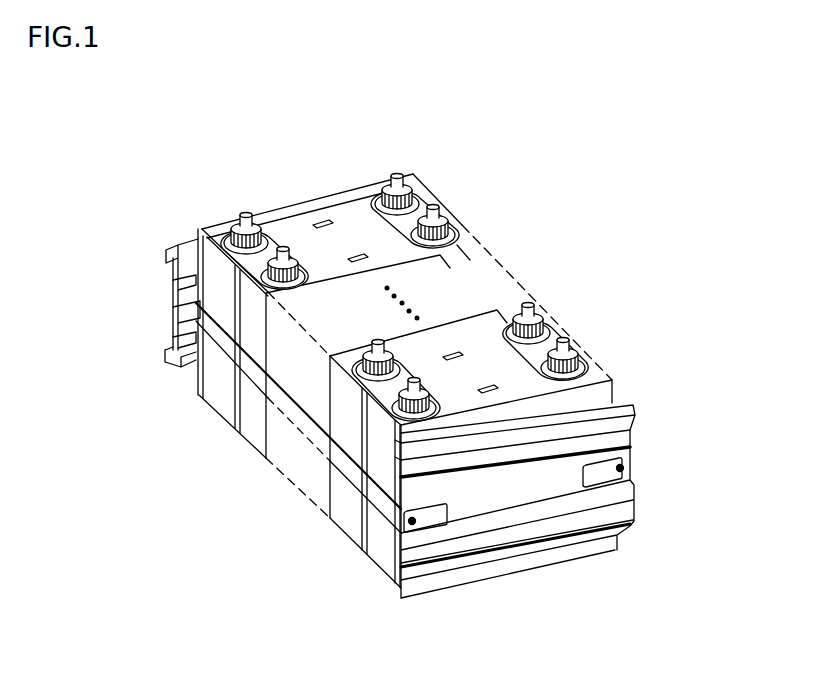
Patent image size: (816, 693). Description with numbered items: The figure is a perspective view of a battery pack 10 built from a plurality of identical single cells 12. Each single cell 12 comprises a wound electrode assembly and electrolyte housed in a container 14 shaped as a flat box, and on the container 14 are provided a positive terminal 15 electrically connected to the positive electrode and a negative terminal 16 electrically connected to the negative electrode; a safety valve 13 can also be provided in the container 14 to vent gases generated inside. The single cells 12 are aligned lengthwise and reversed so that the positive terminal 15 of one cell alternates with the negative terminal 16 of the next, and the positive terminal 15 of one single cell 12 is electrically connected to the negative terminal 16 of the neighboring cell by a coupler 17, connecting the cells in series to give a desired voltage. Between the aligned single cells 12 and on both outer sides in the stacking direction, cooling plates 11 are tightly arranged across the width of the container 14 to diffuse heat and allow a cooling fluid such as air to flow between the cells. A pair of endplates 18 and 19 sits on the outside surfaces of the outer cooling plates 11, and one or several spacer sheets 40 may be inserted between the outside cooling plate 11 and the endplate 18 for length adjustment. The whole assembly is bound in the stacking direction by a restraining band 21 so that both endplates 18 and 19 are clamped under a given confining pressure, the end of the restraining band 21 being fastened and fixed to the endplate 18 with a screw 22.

The battery pack 10 is at (680, 194).
The cooling plate 11 is at (200, 400).
The single cell 12 is at (383, 241).
The safety valve 13 is at (323, 218).
The container 14 is at (342, 213).
The positive terminal 15 is at (246, 212).
The negative terminal 16 is at (287, 258).
The coupler 17 is at (270, 238).
The endplate 18 is at (636, 412).
The endplate 19 is at (166, 250).
The restraining band 21 is at (348, 488).
The screw 22 is at (627, 468).
The spacer sheet 40 is at (612, 399).